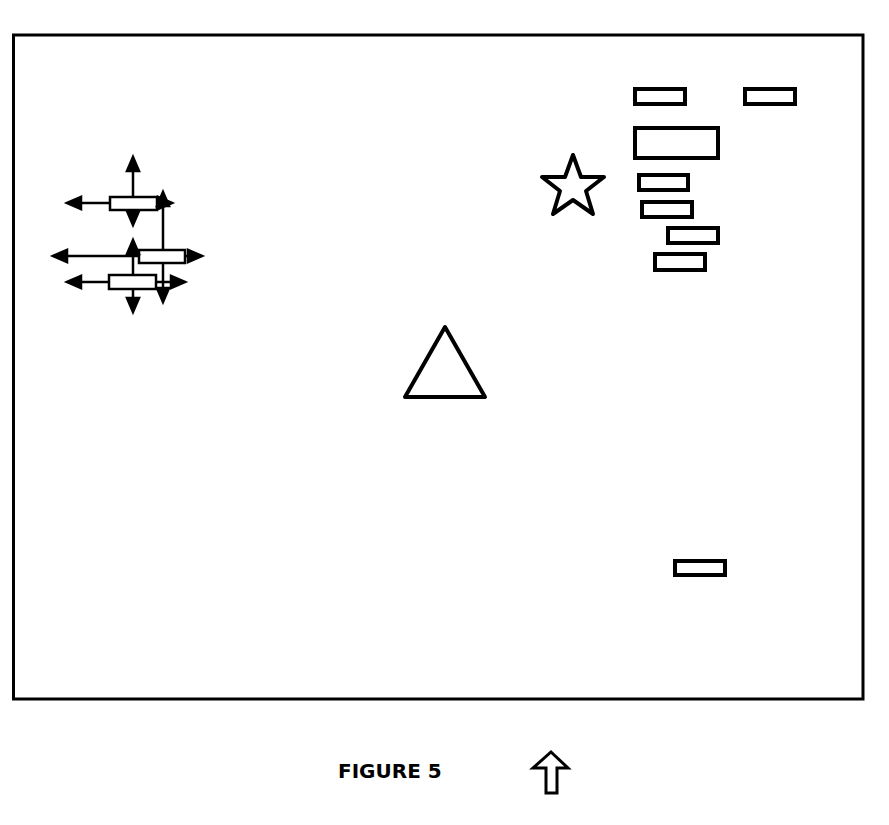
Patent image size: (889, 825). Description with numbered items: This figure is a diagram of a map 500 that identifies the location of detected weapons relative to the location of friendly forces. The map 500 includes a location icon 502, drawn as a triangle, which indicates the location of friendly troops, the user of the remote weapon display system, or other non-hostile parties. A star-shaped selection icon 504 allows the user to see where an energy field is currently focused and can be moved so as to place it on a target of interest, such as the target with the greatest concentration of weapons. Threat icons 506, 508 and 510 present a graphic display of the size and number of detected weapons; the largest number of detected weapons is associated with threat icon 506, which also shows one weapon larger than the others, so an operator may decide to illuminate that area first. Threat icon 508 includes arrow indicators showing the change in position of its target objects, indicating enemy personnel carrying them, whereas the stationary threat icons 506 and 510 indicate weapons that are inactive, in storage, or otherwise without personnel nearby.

The map 500 is at (525, 772).
The location icon 502 is at (445, 362).
The selection icon 504 is at (553, 184).
The threat icon 506 is at (715, 179).
The threat icon 508 is at (127, 248).
The threat icon 510 is at (712, 551).